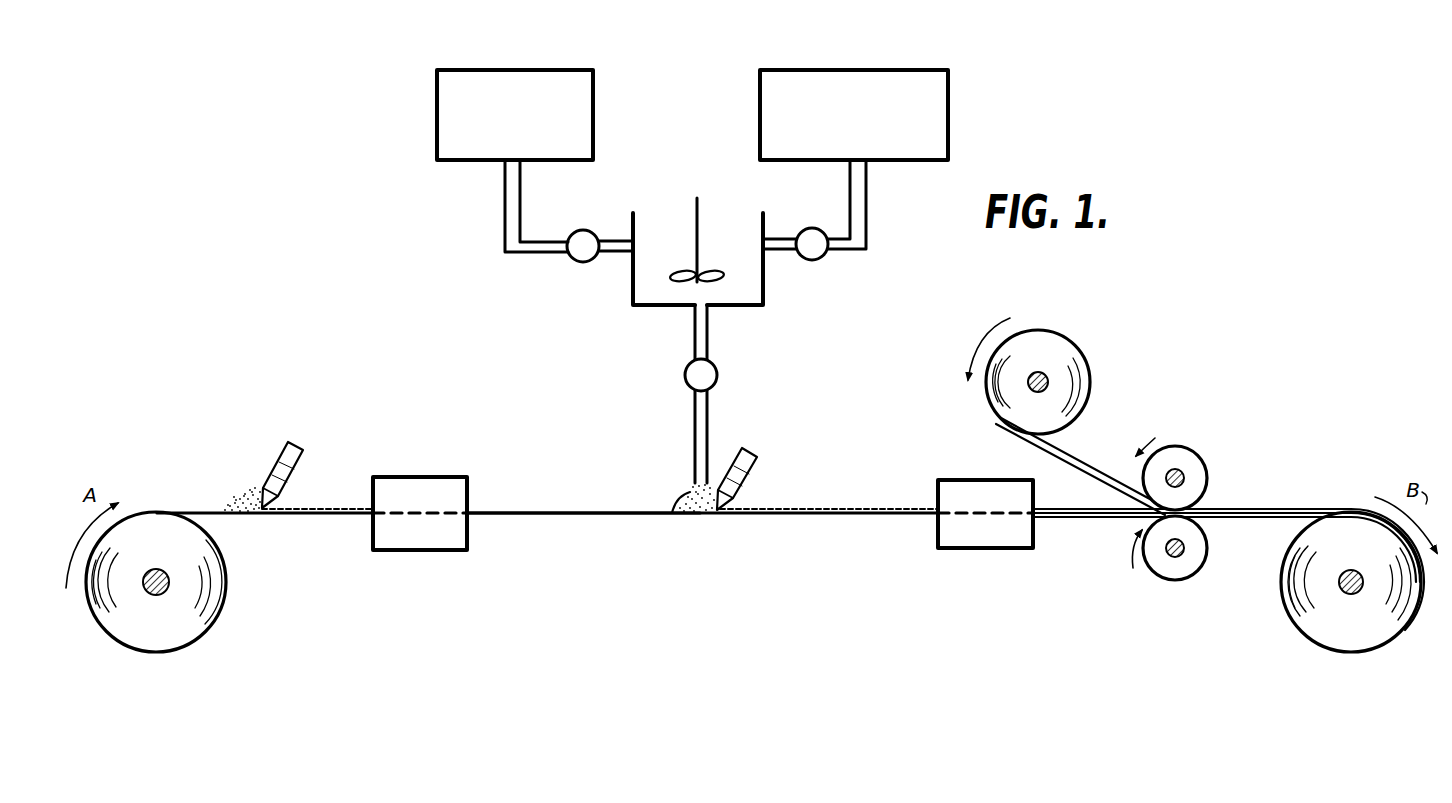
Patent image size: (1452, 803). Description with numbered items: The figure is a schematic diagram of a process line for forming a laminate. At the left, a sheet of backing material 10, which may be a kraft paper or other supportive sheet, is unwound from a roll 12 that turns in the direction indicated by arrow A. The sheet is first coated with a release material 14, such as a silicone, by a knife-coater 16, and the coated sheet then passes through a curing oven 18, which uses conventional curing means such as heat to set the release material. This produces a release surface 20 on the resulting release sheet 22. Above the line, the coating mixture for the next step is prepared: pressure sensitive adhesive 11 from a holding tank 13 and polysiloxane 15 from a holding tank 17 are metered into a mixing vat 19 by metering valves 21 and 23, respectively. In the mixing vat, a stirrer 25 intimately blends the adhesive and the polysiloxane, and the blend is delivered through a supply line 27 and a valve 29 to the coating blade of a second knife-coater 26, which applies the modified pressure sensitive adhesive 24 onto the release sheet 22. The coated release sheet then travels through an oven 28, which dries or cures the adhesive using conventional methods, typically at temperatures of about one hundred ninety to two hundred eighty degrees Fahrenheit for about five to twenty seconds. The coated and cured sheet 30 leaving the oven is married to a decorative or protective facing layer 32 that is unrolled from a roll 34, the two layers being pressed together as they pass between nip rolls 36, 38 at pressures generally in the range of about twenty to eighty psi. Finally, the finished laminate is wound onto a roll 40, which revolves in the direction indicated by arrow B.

The sheet of backing material 10 is at (198, 512).
The pressure sensitive adhesive 11 is at (457, 92).
The roll 12 is at (223, 606).
The holding tank 13 is at (437, 118).
The release material 14 is at (323, 509).
The polysiloxane 15 is at (904, 90).
The knife-coater 16 is at (272, 462).
The holding tank 17 is at (948, 132).
The curing oven 18 is at (371, 545).
The mixing vat 19 is at (763, 275).
The release surface 20 is at (526, 512).
The metering valve 21 is at (581, 230).
The release sheet 22 is at (606, 516).
The metering valve 23 is at (807, 230).
The modified pressure sensitive adhesive 24 is at (668, 515).
The stirrer 25 is at (681, 286).
The knife-coater 26 is at (756, 461).
The supply line 27 is at (709, 328).
The oven 28 is at (986, 550).
The valve 29 is at (684, 378).
The coated and cured sheet 30 is at (1076, 517).
The facing layer 32 is at (1081, 462).
The roll 34 is at (1070, 345).
The nip roll 36 is at (1209, 466).
The nip roll 38 is at (1208, 539).
The roll 40 is at (1341, 649).